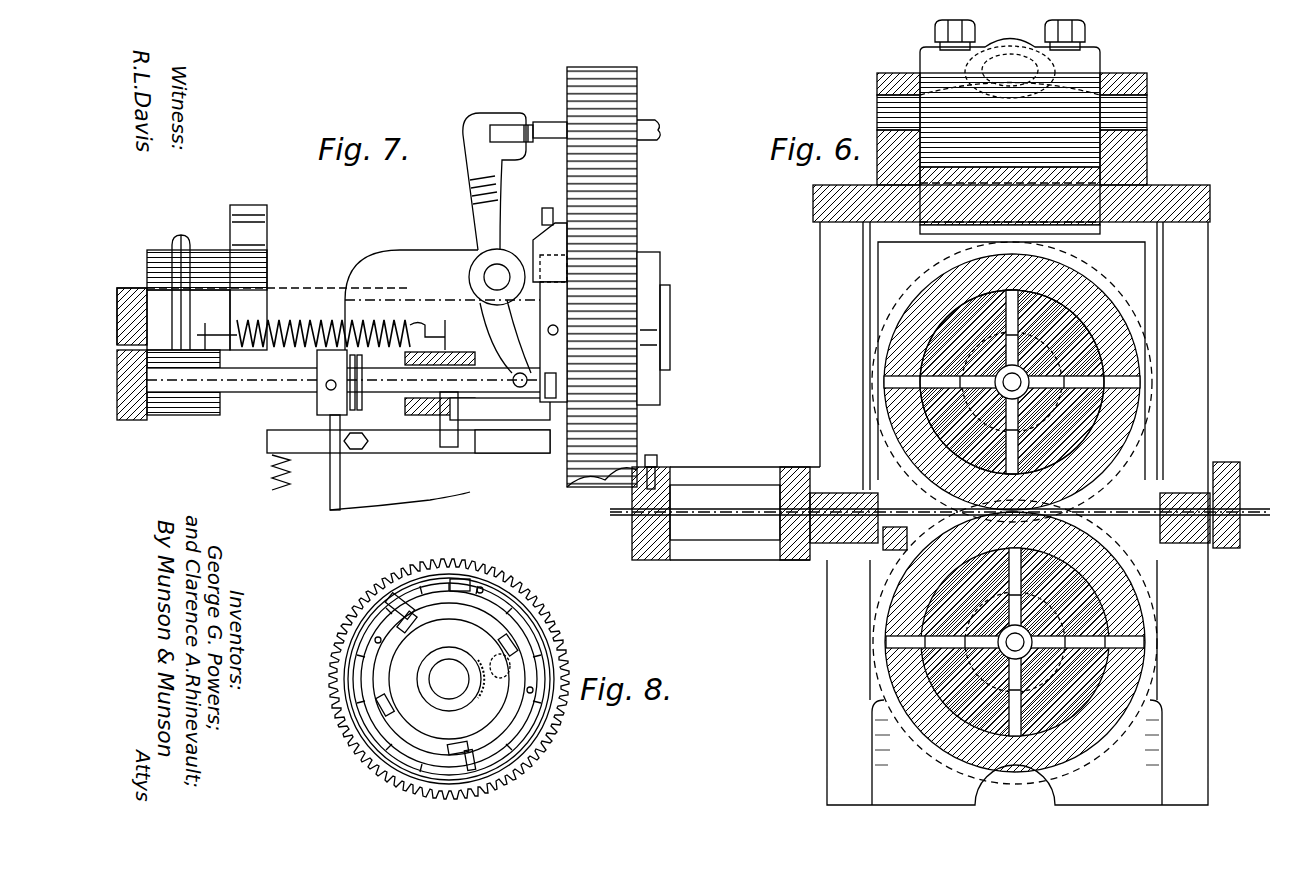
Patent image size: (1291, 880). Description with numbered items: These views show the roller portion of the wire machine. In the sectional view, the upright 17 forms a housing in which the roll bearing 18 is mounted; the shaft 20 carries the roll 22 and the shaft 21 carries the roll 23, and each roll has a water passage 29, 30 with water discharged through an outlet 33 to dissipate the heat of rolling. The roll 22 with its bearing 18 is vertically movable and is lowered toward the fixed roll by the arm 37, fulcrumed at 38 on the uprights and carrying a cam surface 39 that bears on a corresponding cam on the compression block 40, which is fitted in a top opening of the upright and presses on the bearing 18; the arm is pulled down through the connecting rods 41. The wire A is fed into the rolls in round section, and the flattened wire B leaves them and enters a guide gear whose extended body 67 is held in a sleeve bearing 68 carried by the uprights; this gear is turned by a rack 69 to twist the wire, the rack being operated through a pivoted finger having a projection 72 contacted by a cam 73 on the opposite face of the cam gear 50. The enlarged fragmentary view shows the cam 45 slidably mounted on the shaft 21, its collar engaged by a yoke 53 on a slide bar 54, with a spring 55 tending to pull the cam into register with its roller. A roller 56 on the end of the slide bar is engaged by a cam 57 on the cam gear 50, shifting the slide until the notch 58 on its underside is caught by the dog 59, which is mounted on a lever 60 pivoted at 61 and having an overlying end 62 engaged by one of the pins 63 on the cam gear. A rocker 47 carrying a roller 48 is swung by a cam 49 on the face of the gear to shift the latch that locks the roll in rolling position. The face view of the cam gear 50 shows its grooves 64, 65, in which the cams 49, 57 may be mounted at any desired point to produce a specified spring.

In FIG. 6, the upright 17 is at (1208, 625).
In FIG. 6, the roll bearing 18 is at (1130, 266).
In FIG. 6, the shaft 20 is at (990, 345).
In FIG. 7, the shaft 21 is at (348, 300).
In FIG. 6, the shaft 21 is at (940, 505).
In FIG. 6, the roll 22 is at (1085, 290).
In FIG. 6, the roll 23 is at (1090, 615).
In FIG. 6, the passage 29 is at (1035, 390).
In FIG. 6, the passage 30 is at (1100, 380).
In FIG. 6, the outlet 33 is at (990, 400).
In FIG. 6, the arm 37 is at (1035, 70).
In FIG. 6, the fulcrum 38 is at (1135, 110).
In FIG. 6, the cam surface 39 is at (1030, 160).
In FIG. 6, the compression block 40 is at (1070, 175).
In FIG. 6, the connecting rod 41 is at (1050, 22).
In FIG. 7, the cam 45 is at (267, 240).
In FIG. 7, the rocker 47 is at (478, 210).
In FIG. 7, the roller 48 is at (490, 138).
In FIG. 7, the cam 49 is at (548, 122).
In FIG. 8, the cam 49 is at (462, 580).
In FIG. 7, the idler gear 50 is at (628, 210).
In FIG. 8, the idler gear 50 is at (560, 608).
In FIG. 7, the yoke 53 is at (185, 312).
In FIG. 7, the slide bar 54 is at (278, 403).
In FIG. 7, the spring 55 is at (300, 318).
In FIG. 7, the roller 56 is at (520, 372).
In FIG. 7, the cam 57 is at (545, 243).
In FIG. 8, the cam 57 is at (405, 610).
In FIG. 7, the notch 58 is at (440, 480).
In FIG. 7, the dog 59 is at (470, 440).
In FIG. 7, the lever 60 is at (408, 453).
In FIG. 7, the pivot 61 is at (340, 490).
In FIG. 7, the overlying end 62 is at (545, 455).
In FIG. 7, the pin 63 is at (550, 208).
In FIG. 8, the pin 63 is at (388, 700).
In FIG. 8, the groove 64 is at (500, 592).
In FIG. 8, the groove 65 is at (495, 615).
In FIG. 6, the extended body 67 is at (800, 545).
In FIG. 6, the sleeve bearing 68 is at (850, 545).
In FIG. 6, the rack 69 is at (890, 550).
In FIG. 8, the projection 72 is at (498, 652).
In FIG. 7, the cam 73 is at (655, 124).
In FIG. 6, the wire A is at (890, 505).
In FIG. 6, the flattened wire B is at (895, 548).